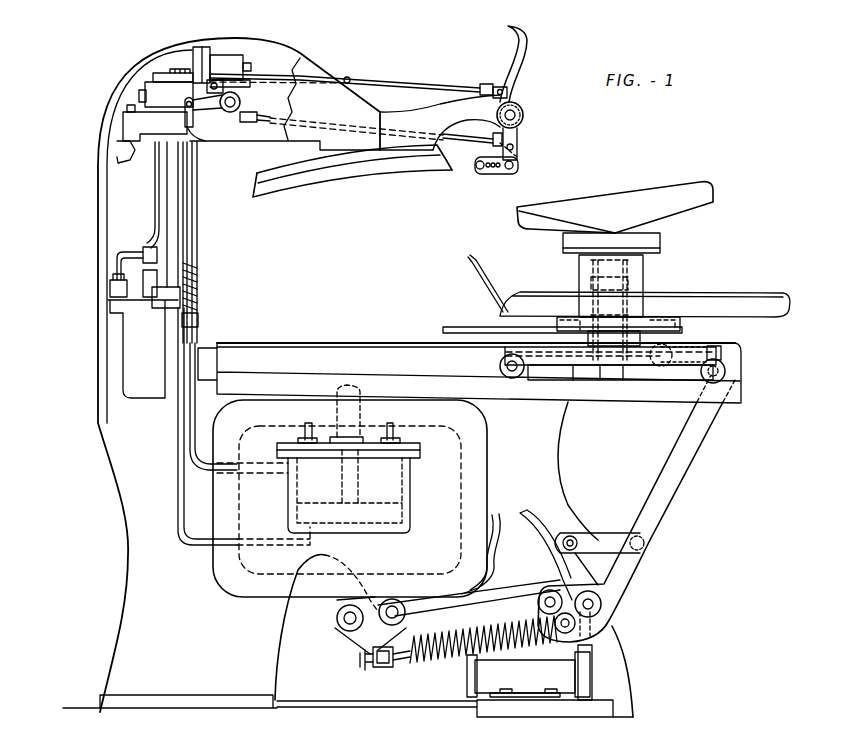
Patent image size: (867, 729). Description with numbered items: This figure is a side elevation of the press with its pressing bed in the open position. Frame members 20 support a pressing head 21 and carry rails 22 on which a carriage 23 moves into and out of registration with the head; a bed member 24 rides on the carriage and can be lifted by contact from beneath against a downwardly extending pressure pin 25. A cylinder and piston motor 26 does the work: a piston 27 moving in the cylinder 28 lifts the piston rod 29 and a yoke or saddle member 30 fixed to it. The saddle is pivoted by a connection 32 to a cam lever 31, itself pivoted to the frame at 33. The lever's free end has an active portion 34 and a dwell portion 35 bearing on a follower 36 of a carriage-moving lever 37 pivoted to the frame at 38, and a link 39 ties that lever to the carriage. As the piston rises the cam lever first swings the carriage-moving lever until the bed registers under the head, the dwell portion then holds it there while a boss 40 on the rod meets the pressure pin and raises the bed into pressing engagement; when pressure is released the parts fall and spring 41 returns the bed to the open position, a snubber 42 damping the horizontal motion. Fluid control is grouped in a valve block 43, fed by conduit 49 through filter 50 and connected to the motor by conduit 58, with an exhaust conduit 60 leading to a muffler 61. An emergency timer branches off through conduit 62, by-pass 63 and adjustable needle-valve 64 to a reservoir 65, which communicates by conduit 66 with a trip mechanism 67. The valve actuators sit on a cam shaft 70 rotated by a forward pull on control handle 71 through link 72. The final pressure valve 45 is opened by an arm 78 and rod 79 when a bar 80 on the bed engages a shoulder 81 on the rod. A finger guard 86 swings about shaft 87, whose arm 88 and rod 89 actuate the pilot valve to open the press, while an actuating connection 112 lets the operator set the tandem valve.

The frame members 20 is at (128, 541).
The pressing head 21 is at (340, 177).
The rails 22 is at (313, 373).
The carriage 23 is at (552, 383).
The bed member 24 is at (628, 190).
The pressure pin 25 is at (620, 387).
The cylinder and piston motor 26 is at (392, 495).
The piston 27 is at (392, 521).
The cylinder 28 is at (413, 472).
The piston rod 29 is at (342, 480).
The yoke or saddle member 30 is at (470, 470).
The cam lever 31 is at (485, 545).
The connection 32 is at (338, 617).
The pivot 33 is at (392, 600).
The active portion 34 is at (515, 598).
The dwell portion 35 is at (545, 525).
The follower 36 is at (562, 590).
The carriage-moving lever 37 is at (673, 480).
The pivot 38 is at (601, 603).
The link 39 is at (705, 352).
The boss 40 is at (352, 388).
The spring 41 is at (440, 660).
The snubber 42 is at (528, 674).
The valve block 43 is at (207, 57).
The secondary inlet valve or final pressure valve 45 is at (166, 88).
The conduit 49 is at (128, 165).
The filter 50 is at (127, 123).
The conduit 58 is at (180, 481).
The conduit 60 is at (180, 153).
The muffler 61 is at (172, 213).
The conduit 62 is at (150, 232).
The by-pass 63 is at (115, 257).
The adjustable needle-valve 64 is at (110, 289).
The reservoir 65 is at (143, 349).
The conduit 66 is at (105, 336).
The fluid pressure actuated trip mechanism 67 is at (233, 63).
The cam shaft 70 is at (242, 100).
The control handle 71 is at (517, 33).
The link 72 is at (432, 88).
The arm 78 is at (200, 106).
The rod 79 is at (190, 249).
The bar 80 is at (457, 326).
The shoulder 81 is at (198, 323).
The finger guard 86 is at (490, 172).
The shaft 87 is at (523, 113).
The arm 88 is at (523, 138).
The rod 89 is at (465, 142).
The actuating connection 112 is at (350, 77).